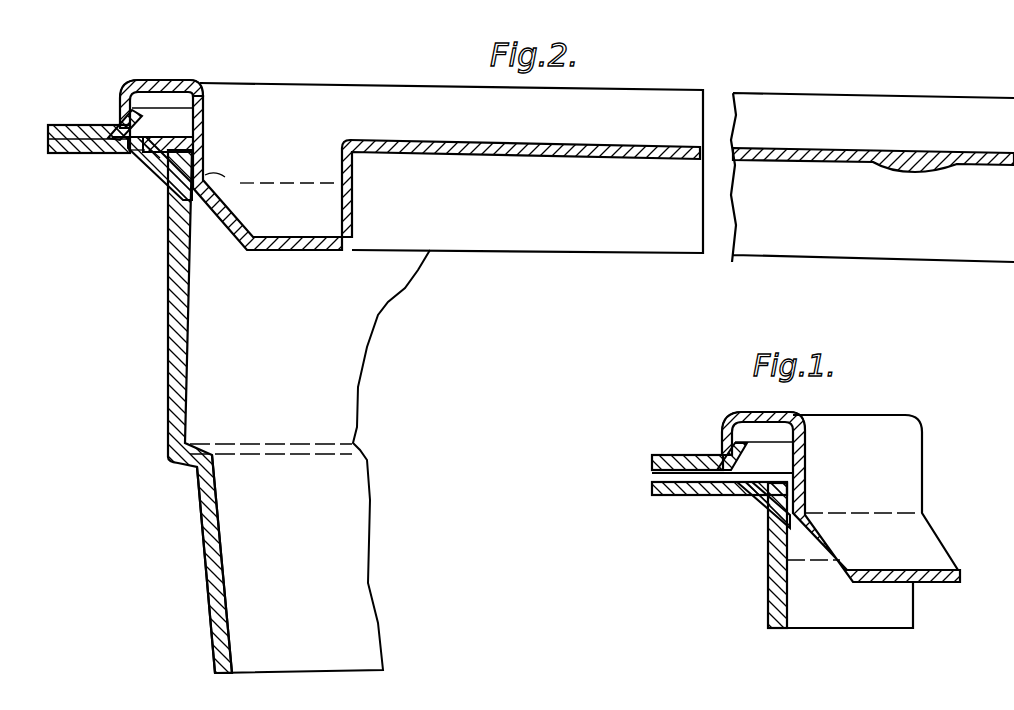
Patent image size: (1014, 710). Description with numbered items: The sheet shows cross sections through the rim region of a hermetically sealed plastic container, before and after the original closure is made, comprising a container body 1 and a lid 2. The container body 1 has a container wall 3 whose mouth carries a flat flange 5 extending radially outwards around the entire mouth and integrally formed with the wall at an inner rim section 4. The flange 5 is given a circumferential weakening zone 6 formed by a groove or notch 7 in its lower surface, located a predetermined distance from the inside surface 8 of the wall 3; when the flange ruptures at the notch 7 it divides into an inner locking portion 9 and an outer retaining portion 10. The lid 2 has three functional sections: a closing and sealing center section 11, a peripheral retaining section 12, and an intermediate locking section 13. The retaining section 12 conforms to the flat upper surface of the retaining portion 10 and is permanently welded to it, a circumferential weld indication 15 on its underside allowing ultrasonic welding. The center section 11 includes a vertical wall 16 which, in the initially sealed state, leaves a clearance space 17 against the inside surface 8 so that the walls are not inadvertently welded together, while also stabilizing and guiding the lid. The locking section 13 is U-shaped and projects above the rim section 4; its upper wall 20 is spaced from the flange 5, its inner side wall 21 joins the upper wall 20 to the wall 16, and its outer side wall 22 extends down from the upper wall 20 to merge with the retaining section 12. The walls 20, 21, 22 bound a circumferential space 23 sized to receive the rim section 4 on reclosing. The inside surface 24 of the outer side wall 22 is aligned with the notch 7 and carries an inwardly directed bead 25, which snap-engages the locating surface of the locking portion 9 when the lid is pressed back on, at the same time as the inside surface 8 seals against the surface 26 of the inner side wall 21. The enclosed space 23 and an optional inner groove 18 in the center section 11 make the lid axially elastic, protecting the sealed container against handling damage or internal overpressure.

In FIG. 2, the container body 1 is at (207, 593).
In FIG. 2, the lid 2 is at (586, 142).
In FIG. 1, the lid 2 is at (917, 575).
In FIG. 2, the container wall 3 is at (168, 308).
In FIG. 1, the container wall 3 is at (777, 555).
In FIG. 2, the inner rim section 4 is at (170, 153).
In FIG. 1, the inner rim section 4 is at (767, 503).
In FIG. 2, the flange 5 is at (90, 157).
In FIG. 1, the flange 5 is at (690, 495).
In FIG. 2, the weakening zone 6 is at (117, 143).
In FIG. 1, the weakening zone 6 is at (723, 493).
In FIG. 2, the groove or notch 7 is at (137, 157).
In FIG. 1, the groove or notch 7 is at (738, 497).
In FIG. 2, the inside surface 8 is at (272, 174).
In FIG. 2, the inner locking portion 9 is at (143, 157).
In FIG. 1, the inner locking portion 9 is at (750, 497).
In FIG. 2, the outer retaining portion 10 is at (60, 155).
In FIG. 1, the outer retaining portion 10 is at (653, 490).
In FIG. 2, the closing and sealing center section 11 is at (807, 160).
In FIG. 1, the closing and sealing center section 11 is at (923, 583).
In FIG. 2, the peripheral retaining section 12 is at (52, 125).
In FIG. 1, the peripheral retaining section 12 is at (652, 462).
In FIG. 2, the intermediate locking section 13 is at (152, 80).
In FIG. 1, the intermediate locking section 13 is at (750, 412).
In FIG. 1, the weld indication 15 is at (682, 473).
In FIG. 2, the vertical wall 16 is at (207, 150).
In FIG. 1, the vertical wall 16 is at (807, 494).
In FIG. 2, the clearance space 17 is at (203, 160).
In FIG. 2, the inner groove 18 is at (300, 162).
In FIG. 2, the upper wall 20 is at (172, 87).
In FIG. 1, the upper wall 20 is at (772, 413).
In FIG. 2, the inner side wall 21 is at (203, 117).
In FIG. 1, the inner side wall 21 is at (806, 443).
In FIG. 2, the outer side wall 22 is at (127, 98).
In FIG. 1, the outer side wall 22 is at (723, 430).
In FIG. 2, the U-shaped groove or space 23 is at (187, 88).
In FIG. 1, the U-shaped groove or space 23 is at (800, 419).
In FIG. 2, the inside surface 24 is at (133, 82).
In FIG. 2, the bead 25 is at (127, 117).
In FIG. 1, the bead 25 is at (733, 447).
In FIG. 2, the surface 26 is at (207, 140).